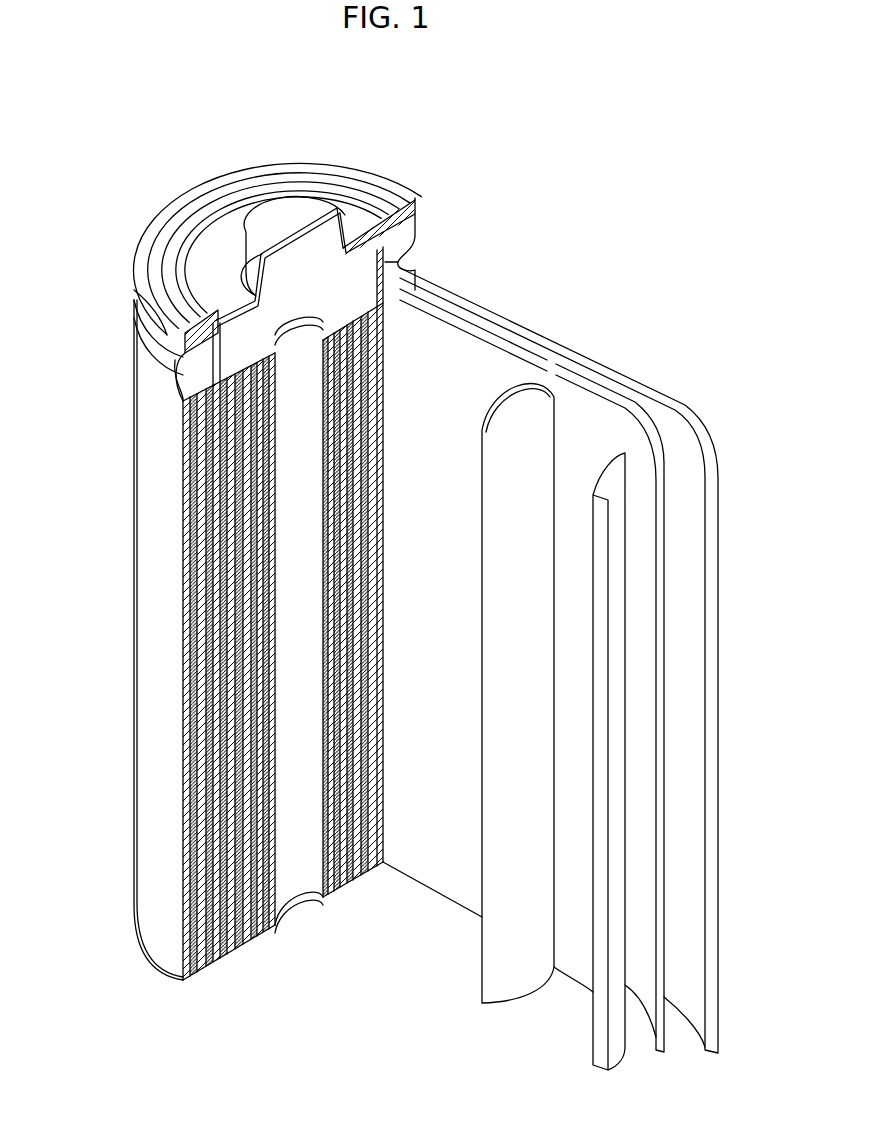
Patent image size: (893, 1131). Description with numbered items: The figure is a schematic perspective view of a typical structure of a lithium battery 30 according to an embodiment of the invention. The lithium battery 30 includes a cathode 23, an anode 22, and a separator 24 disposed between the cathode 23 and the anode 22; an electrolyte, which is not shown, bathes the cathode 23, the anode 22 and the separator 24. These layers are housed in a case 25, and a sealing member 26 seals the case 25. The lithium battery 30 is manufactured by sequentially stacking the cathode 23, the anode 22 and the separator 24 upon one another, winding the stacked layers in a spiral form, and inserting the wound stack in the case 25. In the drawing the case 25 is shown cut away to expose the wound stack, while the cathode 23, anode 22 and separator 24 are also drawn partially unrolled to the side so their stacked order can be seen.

The lithium battery 30 is at (362, 103).
The anode 22 is at (693, 443).
The cathode 23 is at (612, 440).
The separator 24 is at (518, 435).
The case 25 is at (146, 623).
The sealing member 26 is at (265, 215).